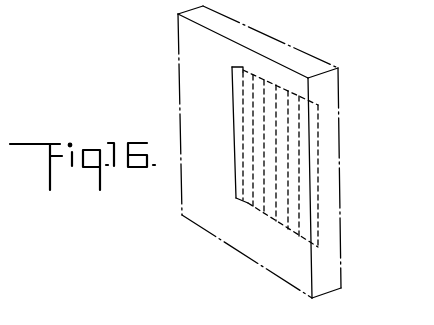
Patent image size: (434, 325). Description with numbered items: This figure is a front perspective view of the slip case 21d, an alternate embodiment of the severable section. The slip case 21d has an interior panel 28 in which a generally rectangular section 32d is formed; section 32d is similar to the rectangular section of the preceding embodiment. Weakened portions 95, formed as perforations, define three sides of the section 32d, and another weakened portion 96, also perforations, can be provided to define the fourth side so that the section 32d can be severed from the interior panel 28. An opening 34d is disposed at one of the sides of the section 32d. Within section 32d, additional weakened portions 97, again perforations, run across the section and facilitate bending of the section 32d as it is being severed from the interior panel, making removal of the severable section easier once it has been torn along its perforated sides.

The block body 28 is at (327, 87).
The slip case 21d is at (338, 28).
The slot side wall 34d is at (242, 134).
The weakened portions 95 is at (250, 74).
The section 32d is at (327, 208).
The weakened portion 96 is at (320, 162).
The weakened portions 97 is at (290, 135).